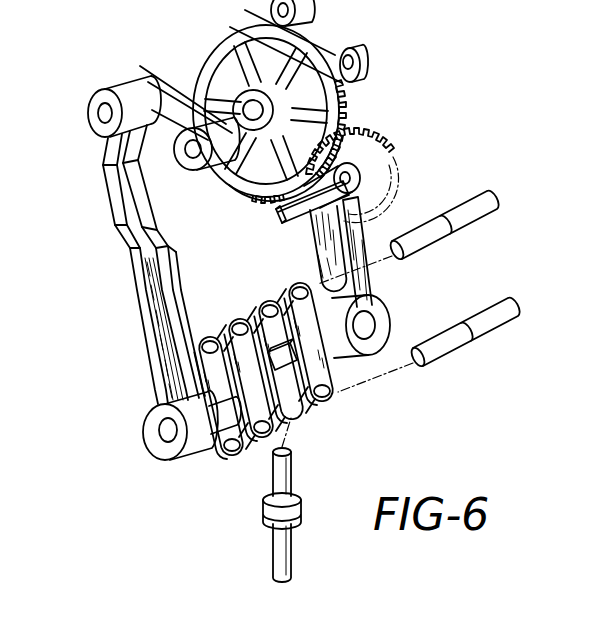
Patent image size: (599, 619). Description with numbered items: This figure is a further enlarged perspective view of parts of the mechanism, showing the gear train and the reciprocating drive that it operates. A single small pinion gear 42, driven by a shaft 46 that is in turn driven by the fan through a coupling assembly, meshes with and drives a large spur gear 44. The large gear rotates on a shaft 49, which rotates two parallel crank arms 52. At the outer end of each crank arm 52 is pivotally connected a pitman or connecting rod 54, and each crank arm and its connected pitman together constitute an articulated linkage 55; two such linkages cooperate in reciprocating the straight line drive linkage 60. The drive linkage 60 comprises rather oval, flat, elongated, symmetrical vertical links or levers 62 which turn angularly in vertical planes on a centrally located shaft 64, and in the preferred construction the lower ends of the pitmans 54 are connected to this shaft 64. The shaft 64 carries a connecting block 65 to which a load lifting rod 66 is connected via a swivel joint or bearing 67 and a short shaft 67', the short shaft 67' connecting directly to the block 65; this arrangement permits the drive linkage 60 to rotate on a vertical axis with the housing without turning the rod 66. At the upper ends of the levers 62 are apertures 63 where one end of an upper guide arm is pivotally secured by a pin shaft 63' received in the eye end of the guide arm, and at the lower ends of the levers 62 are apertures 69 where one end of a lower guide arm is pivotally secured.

The pinion gear 42 is at (380, 143).
The spur gear 44 is at (340, 110).
The shaft 46 is at (274, 212).
The shaft 49 is at (187, 170).
The crank arm 52 is at (190, 76).
The pitman or connecting rod 54 is at (317, 237).
The articulated linkage 55 is at (145, 358).
The drive linkage 60 is at (323, 415).
The link or lever 62 is at (343, 392).
The aperture 63 is at (263, 365).
The pin shaft 63' is at (419, 291).
The shaft 64 is at (215, 432).
The connecting block 65 is at (302, 425).
The load lifting rod 66 is at (275, 560).
The swivel joint or bearing 67 is at (249, 530).
The short shaft 67' is at (313, 497).
The aperture 69 is at (225, 458).